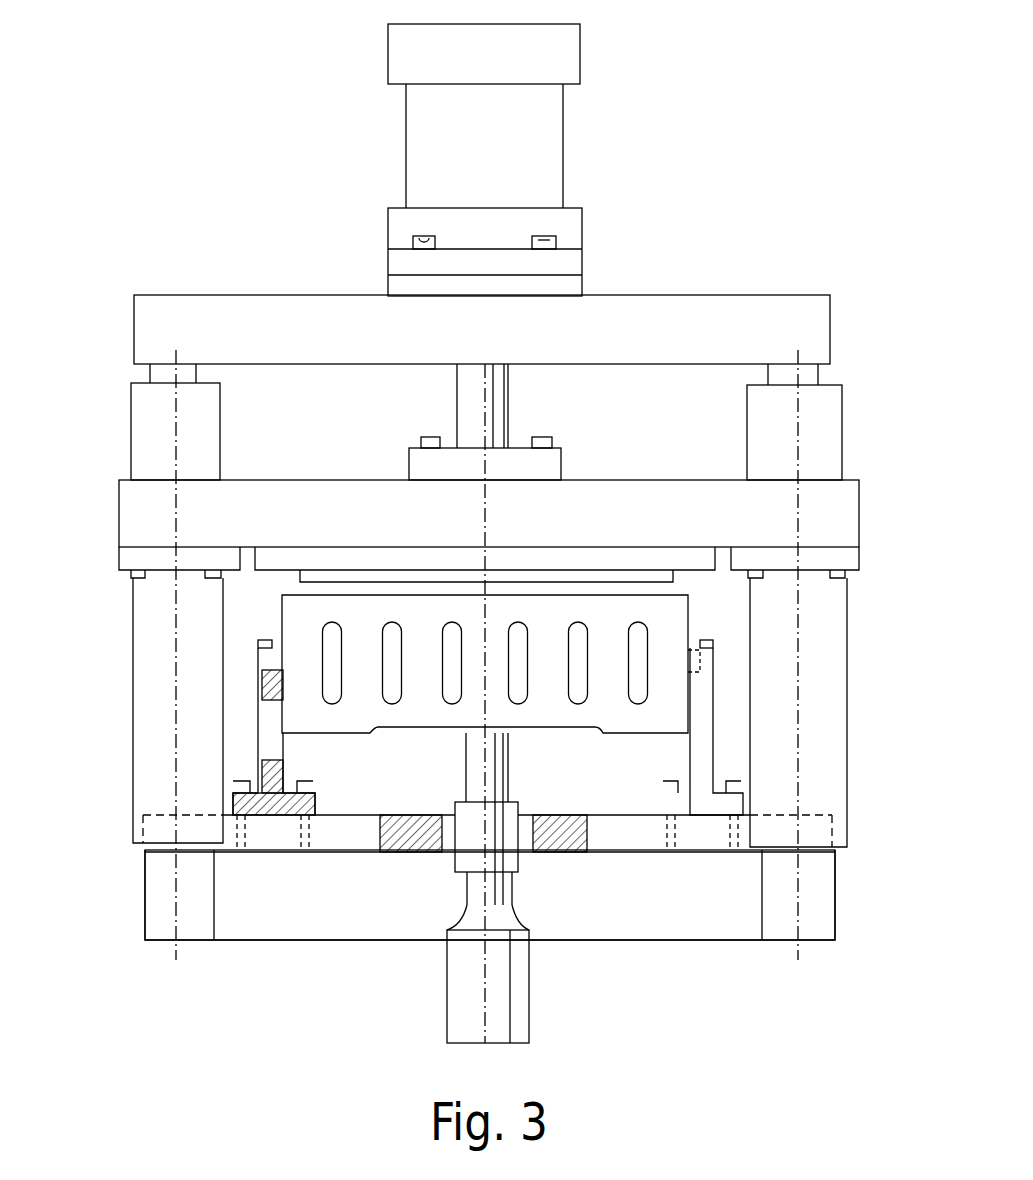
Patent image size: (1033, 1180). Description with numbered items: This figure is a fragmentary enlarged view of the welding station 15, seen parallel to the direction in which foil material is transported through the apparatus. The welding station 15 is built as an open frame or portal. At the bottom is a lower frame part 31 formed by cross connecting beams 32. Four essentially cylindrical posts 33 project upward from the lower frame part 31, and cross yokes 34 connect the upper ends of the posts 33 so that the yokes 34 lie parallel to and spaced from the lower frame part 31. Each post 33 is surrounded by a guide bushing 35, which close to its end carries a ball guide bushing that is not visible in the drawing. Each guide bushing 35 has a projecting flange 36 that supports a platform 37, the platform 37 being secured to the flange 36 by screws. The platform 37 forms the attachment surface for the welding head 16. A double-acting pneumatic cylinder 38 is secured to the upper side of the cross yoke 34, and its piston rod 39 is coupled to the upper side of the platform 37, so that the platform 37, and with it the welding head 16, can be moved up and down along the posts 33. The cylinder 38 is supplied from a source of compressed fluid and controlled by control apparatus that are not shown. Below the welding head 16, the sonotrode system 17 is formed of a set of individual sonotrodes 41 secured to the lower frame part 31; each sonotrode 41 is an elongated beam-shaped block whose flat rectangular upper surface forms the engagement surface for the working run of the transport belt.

The welding station 15 is at (738, 110).
The welding head 16 is at (690, 572).
The sonotrode system 17 is at (590, 775).
The lower frame part 31 is at (238, 945).
The cross connecting beams 32 is at (384, 926).
The posts 33 is at (160, 373).
The cross yokes 34 is at (725, 351).
The guide bushing 35 is at (143, 680).
The projecting flange 36 is at (130, 558).
The platform 37 is at (611, 500).
The double-acting pneumatic cylinder 38 is at (542, 180).
The piston rod 39 is at (497, 408).
The sonotrodes 41 is at (630, 735).